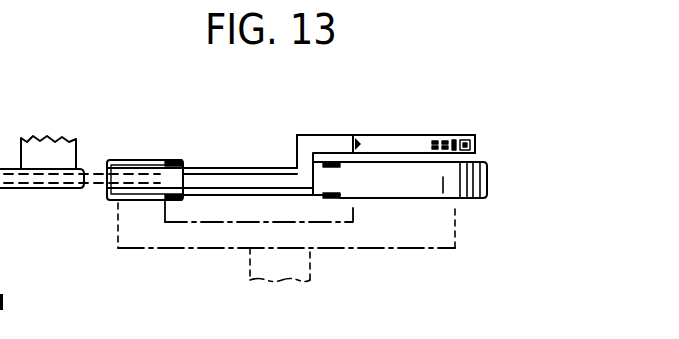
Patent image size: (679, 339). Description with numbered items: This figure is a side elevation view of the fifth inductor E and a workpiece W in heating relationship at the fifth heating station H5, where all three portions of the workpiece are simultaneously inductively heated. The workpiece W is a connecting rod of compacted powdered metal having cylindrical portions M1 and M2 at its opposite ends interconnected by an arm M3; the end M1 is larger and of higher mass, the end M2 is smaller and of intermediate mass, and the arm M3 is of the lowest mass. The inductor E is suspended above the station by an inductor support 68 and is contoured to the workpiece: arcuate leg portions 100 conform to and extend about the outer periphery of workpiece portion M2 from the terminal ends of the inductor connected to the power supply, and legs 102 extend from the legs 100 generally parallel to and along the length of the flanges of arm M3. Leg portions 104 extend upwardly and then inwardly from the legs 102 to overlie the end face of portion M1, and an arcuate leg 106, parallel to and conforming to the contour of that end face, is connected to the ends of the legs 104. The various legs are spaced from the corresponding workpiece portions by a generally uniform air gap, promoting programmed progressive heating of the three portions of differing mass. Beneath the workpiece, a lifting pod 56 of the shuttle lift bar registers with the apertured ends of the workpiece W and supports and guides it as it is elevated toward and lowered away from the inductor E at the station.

The inductor support 68 is at (45, 135).
The heating station H5 is at (146, 124).
The arcuate leg portion 100 is at (153, 177).
The leg 102 is at (210, 182).
The arm M3 is at (253, 166).
The leg portion 104 is at (327, 142).
The inductor E is at (390, 128).
The arcuate leg 106 is at (453, 137).
The workpiece W is at (377, 207).
The cylindrical portion M1 is at (467, 203).
The cylindrical portion M2 is at (123, 203).
The lifting pod 56 is at (184, 252).